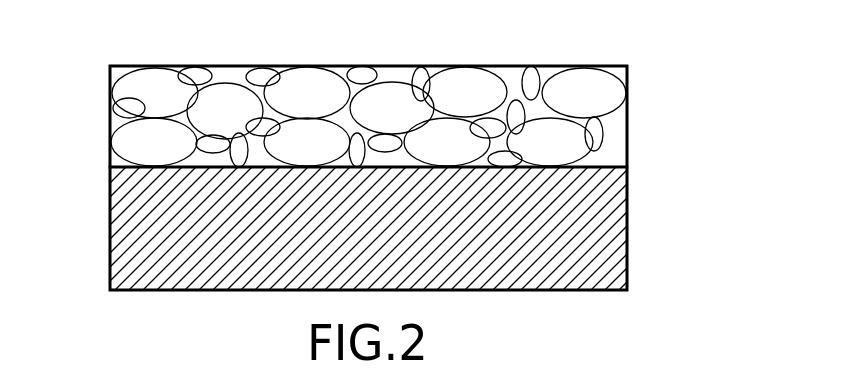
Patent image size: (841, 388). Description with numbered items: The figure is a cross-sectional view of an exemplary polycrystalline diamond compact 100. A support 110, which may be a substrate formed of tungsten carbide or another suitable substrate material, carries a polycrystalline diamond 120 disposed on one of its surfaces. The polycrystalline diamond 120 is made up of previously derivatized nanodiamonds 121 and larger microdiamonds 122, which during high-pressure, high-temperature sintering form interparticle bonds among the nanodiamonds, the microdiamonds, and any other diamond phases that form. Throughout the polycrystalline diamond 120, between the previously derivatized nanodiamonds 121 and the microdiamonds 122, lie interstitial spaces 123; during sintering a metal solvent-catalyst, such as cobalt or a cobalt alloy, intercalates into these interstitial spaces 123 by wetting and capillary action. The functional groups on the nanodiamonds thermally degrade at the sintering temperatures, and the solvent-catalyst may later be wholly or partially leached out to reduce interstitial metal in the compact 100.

The polycrystalline diamond compact 100 is at (713, 67).
The support 110 is at (138, 217).
The polycrystalline diamond 120 is at (637, 67).
The previously derivatized nanodiamonds 121 is at (123, 107).
The microdiamonds 122 is at (143, 139).
The interstitial spaces 123 is at (270, 112).